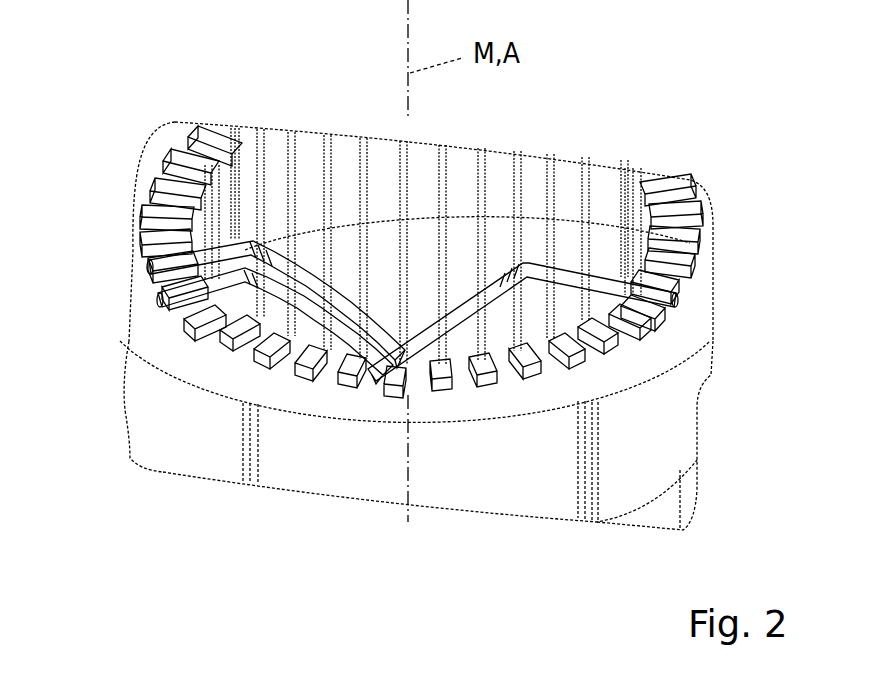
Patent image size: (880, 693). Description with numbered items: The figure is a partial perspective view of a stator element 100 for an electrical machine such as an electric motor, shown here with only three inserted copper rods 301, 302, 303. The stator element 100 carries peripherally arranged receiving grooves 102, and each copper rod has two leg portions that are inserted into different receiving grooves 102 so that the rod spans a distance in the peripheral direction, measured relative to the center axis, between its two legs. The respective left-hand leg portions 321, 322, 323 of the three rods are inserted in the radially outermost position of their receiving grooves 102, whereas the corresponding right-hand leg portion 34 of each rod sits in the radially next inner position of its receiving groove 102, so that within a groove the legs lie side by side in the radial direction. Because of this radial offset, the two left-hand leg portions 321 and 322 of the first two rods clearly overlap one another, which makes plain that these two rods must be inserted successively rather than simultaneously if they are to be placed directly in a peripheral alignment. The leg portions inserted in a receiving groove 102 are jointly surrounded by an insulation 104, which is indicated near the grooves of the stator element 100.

The stator element 100 is at (320, 400).
The receiving groove 102 is at (148, 240).
The insulation 104 is at (160, 182).
The copper rod 301 is at (228, 305).
The copper rod 302 is at (185, 222).
The copper rod 303 is at (578, 322).
The left-hand leg portion 321 is at (167, 287).
The left-hand leg portion 322 is at (170, 320).
The left-hand leg portion 323 is at (392, 385).
The right-hand leg portion 34 is at (637, 300).